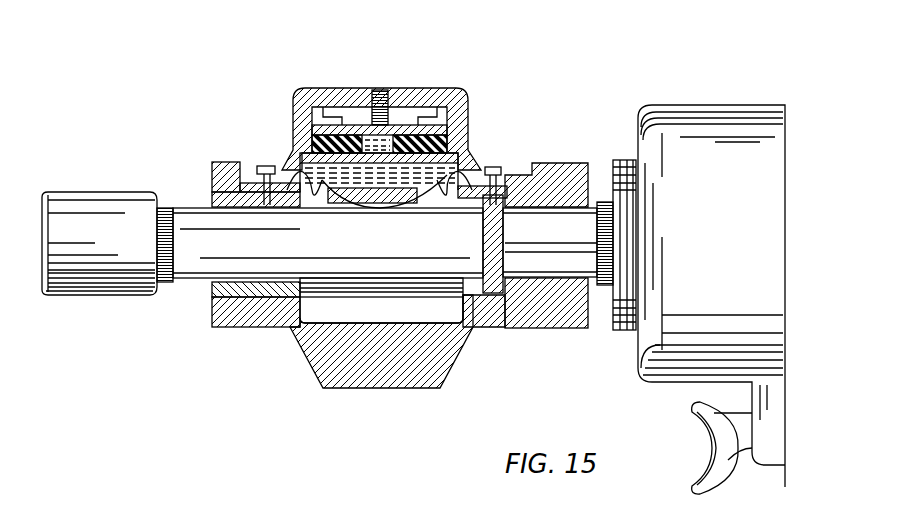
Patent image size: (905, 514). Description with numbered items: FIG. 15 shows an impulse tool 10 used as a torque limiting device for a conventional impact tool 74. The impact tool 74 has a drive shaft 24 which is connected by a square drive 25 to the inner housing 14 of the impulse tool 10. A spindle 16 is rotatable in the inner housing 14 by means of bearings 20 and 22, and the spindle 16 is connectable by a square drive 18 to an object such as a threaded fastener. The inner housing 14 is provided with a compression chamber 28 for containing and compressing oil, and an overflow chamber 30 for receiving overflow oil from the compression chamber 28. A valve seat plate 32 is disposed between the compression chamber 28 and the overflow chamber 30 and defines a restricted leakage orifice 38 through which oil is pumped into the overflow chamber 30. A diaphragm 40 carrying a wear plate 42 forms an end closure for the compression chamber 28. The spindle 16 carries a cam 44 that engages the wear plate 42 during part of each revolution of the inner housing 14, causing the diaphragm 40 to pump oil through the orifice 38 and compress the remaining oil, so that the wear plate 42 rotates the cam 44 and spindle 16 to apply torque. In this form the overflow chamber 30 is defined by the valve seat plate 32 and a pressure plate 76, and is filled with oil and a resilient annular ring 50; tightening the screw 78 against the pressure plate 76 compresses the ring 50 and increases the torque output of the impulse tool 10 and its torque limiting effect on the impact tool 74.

The impulse tool 10 is at (532, 88).
The inner housing 14 is at (550, 305).
The spindle 16 is at (190, 225).
The square drive 18 is at (103, 220).
The bearing 20 is at (262, 288).
The bearing 22 is at (489, 290).
The drive shaft 24 is at (598, 204).
The square drive 25 is at (508, 230).
The compression chamber 28 is at (462, 170).
The overflow chamber 30 is at (410, 110).
The valve seat plate 32 is at (290, 162).
The restricted leakage orifice 38 is at (375, 157).
The diaphragm 40 is at (445, 176).
The wear plate 42 is at (386, 195).
The cam 44 is at (378, 308).
The resilient annular ring 50 is at (339, 107).
The impact tool 74 is at (732, 137).
The pressure plate 76 is at (318, 88).
The screw 78 is at (378, 100).